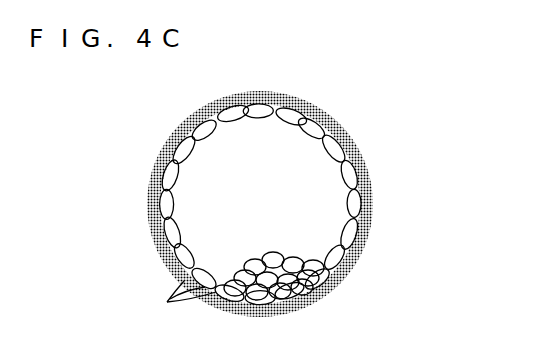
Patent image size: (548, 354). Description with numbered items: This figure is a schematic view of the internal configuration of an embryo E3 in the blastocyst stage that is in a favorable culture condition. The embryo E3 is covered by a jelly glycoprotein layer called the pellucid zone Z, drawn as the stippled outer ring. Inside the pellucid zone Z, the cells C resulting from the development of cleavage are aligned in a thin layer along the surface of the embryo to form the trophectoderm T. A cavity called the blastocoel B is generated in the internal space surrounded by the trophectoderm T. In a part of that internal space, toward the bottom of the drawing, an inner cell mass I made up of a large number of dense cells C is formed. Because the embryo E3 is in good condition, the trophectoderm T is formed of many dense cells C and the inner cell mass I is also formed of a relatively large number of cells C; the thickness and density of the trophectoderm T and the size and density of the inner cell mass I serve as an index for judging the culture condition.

The embryo E3 is at (425, 158).
The pellucid zone Z is at (163, 161).
The blastocoel B is at (300, 142).
The trophectoderm T is at (163, 240).
The inner cell mass I is at (322, 252).
The cells C is at (197, 290).